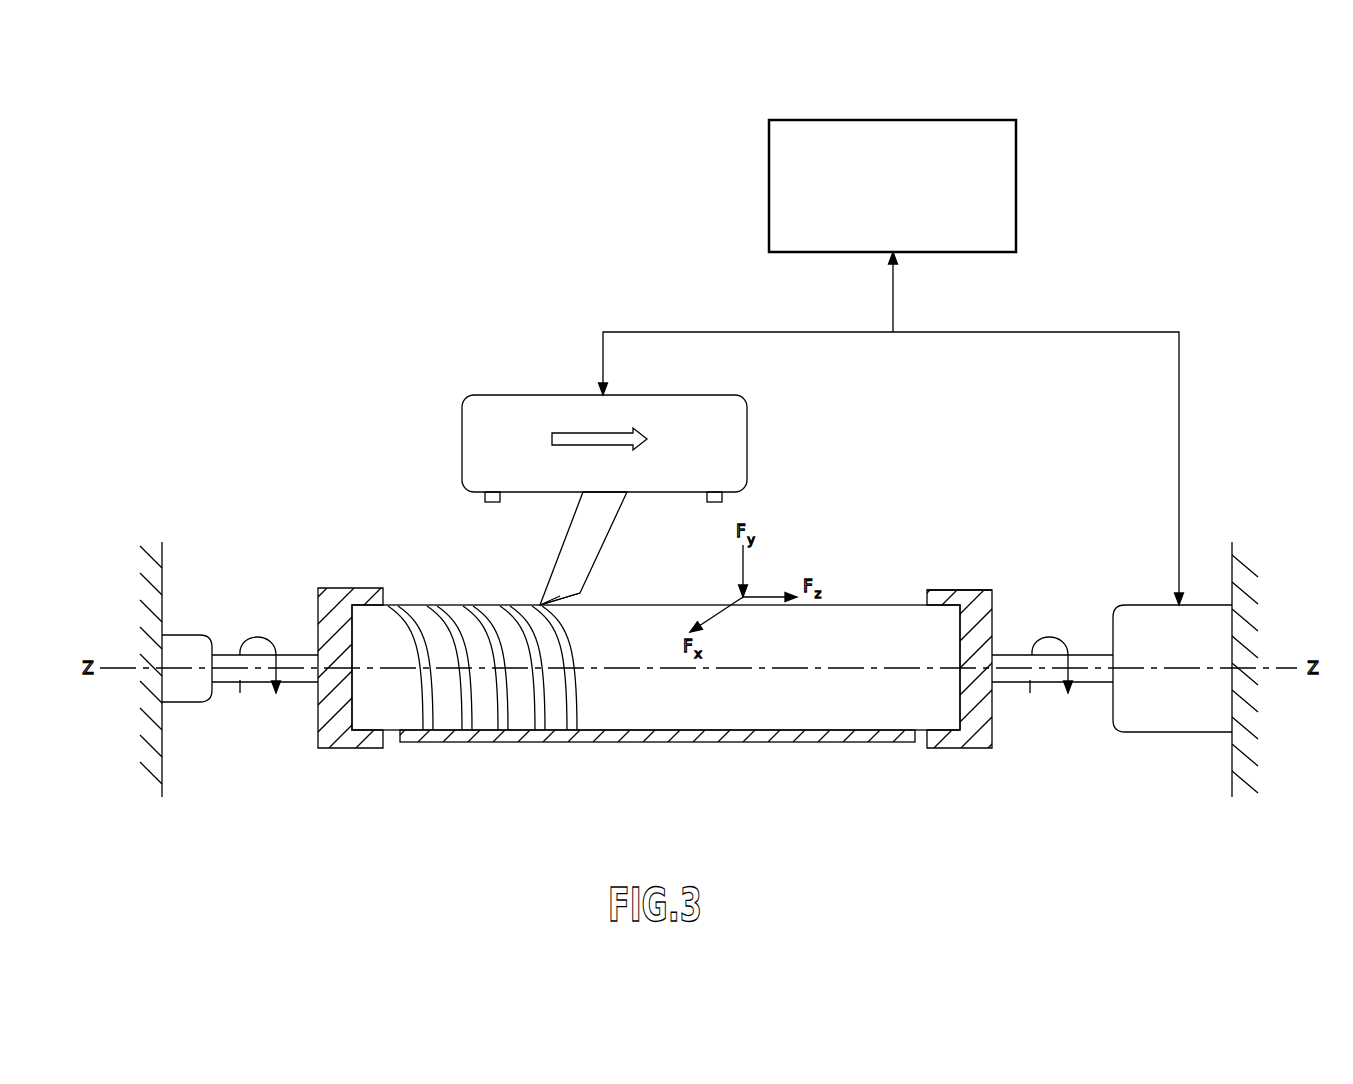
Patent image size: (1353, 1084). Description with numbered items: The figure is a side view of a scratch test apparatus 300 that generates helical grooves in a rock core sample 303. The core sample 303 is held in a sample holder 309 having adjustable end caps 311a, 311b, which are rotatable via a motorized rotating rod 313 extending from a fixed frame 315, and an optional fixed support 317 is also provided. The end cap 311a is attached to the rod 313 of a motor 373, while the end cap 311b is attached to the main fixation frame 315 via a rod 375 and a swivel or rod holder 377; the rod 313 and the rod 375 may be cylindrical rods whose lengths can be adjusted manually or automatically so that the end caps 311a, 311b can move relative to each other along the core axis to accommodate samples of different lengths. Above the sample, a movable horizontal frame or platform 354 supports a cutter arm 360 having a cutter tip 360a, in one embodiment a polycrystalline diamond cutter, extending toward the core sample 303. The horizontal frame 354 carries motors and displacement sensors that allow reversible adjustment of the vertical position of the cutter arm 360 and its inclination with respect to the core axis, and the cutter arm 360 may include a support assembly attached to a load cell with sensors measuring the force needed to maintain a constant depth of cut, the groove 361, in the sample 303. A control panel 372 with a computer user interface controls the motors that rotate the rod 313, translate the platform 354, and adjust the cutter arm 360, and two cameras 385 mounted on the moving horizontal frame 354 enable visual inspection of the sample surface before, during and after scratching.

The scratch test apparatus 300 is at (343, 417).
The core sample 303 is at (717, 713).
The sample holder 309 is at (951, 578).
The end cap 311a is at (970, 600).
The end cap 311b is at (343, 597).
The motorized rotating rod 313 is at (1007, 673).
The fixed frame 315 is at (153, 777).
The fixed support 317 is at (818, 735).
The movable horizontal frame 354 is at (530, 395).
The cutter arm 360 is at (607, 517).
The cutter tip 360a is at (558, 583).
The groove 361 is at (572, 742).
The control panel 372 is at (973, 120).
The motor 373 is at (1207, 605).
The rod 375 is at (227, 673).
The swivel or rod holder 377 is at (185, 636).
The cameras 385 is at (484, 500).